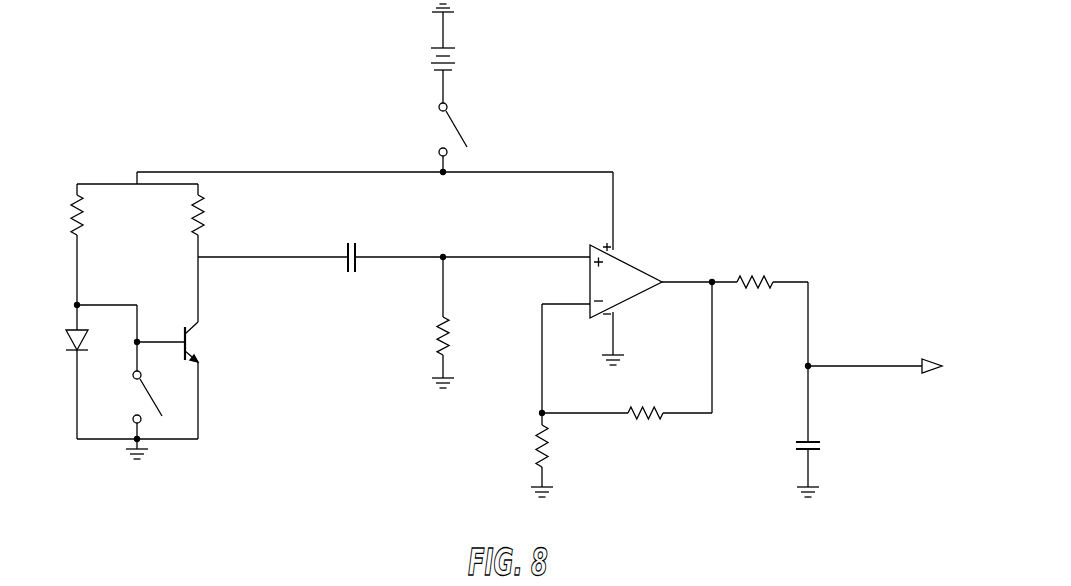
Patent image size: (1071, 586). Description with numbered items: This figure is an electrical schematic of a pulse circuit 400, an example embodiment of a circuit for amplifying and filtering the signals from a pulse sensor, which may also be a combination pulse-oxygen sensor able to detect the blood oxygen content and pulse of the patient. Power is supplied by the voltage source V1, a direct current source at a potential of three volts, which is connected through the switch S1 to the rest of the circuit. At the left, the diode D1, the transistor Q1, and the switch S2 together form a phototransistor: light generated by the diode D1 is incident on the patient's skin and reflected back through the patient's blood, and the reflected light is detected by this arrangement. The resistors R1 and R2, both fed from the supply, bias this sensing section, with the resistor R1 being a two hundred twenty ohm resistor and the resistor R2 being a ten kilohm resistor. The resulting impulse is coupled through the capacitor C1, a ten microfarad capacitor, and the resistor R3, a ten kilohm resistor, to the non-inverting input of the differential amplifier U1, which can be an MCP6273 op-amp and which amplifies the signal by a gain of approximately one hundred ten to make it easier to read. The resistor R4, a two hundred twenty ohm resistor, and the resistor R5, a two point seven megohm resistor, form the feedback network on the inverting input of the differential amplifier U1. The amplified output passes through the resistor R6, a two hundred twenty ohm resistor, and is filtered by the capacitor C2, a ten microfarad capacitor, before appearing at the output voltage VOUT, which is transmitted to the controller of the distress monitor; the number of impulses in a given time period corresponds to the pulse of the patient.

The pulse circuit 400 is at (783, 68).
The voltage source V1 is at (457, 53).
The switch S1 is at (459, 137).
The resistor R1 is at (91, 244).
The resistor R2 is at (212, 253).
The diode D1 is at (91, 372).
The transistor Q1 is at (207, 380).
The switch S2 is at (152, 405).
The capacitor C1 is at (349, 241).
The resistor R3 is at (454, 322).
The differential amplifier U1 is at (626, 276).
The resistor R6 is at (755, 262).
The resistor R5 is at (645, 396).
The resistor R4 is at (554, 461).
The capacitor C2 is at (820, 463).
The output voltage VOUT is at (897, 366).